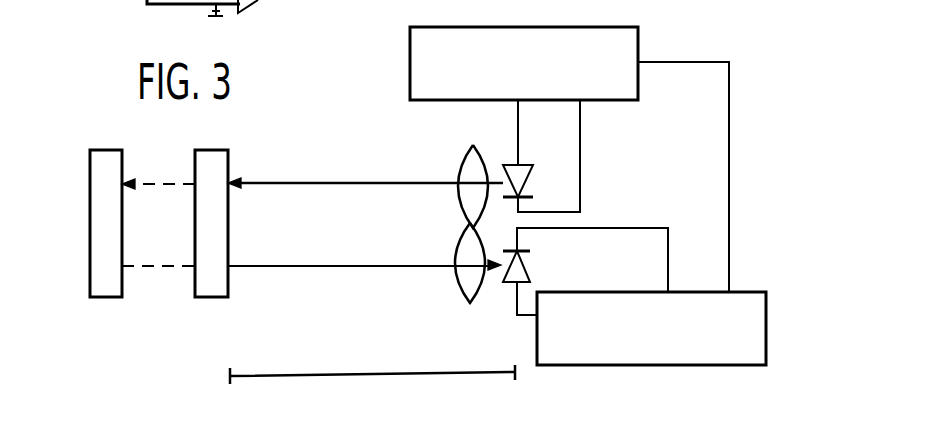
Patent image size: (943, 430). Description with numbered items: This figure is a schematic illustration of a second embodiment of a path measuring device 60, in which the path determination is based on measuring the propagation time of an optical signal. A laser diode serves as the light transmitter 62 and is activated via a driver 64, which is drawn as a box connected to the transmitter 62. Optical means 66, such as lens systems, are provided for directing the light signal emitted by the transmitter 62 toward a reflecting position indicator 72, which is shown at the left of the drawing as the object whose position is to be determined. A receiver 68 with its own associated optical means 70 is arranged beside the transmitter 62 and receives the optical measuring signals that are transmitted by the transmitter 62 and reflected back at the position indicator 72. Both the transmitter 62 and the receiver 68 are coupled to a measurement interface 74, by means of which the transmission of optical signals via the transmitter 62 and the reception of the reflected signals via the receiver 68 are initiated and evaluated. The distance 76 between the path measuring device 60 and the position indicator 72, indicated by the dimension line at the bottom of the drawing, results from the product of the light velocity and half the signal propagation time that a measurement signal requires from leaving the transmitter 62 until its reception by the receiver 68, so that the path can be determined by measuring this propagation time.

The path measuring device 60 is at (407, 293).
The light transmitter 62 is at (527, 166).
The driver 64 is at (552, 22).
The optical means 66 is at (472, 160).
The receiver 68 is at (508, 290).
The second lens 70 is at (468, 278).
The reflecting position indicator 72 is at (217, 288).
The measurement interface 74 is at (753, 322).
The distance 76 is at (316, 373).